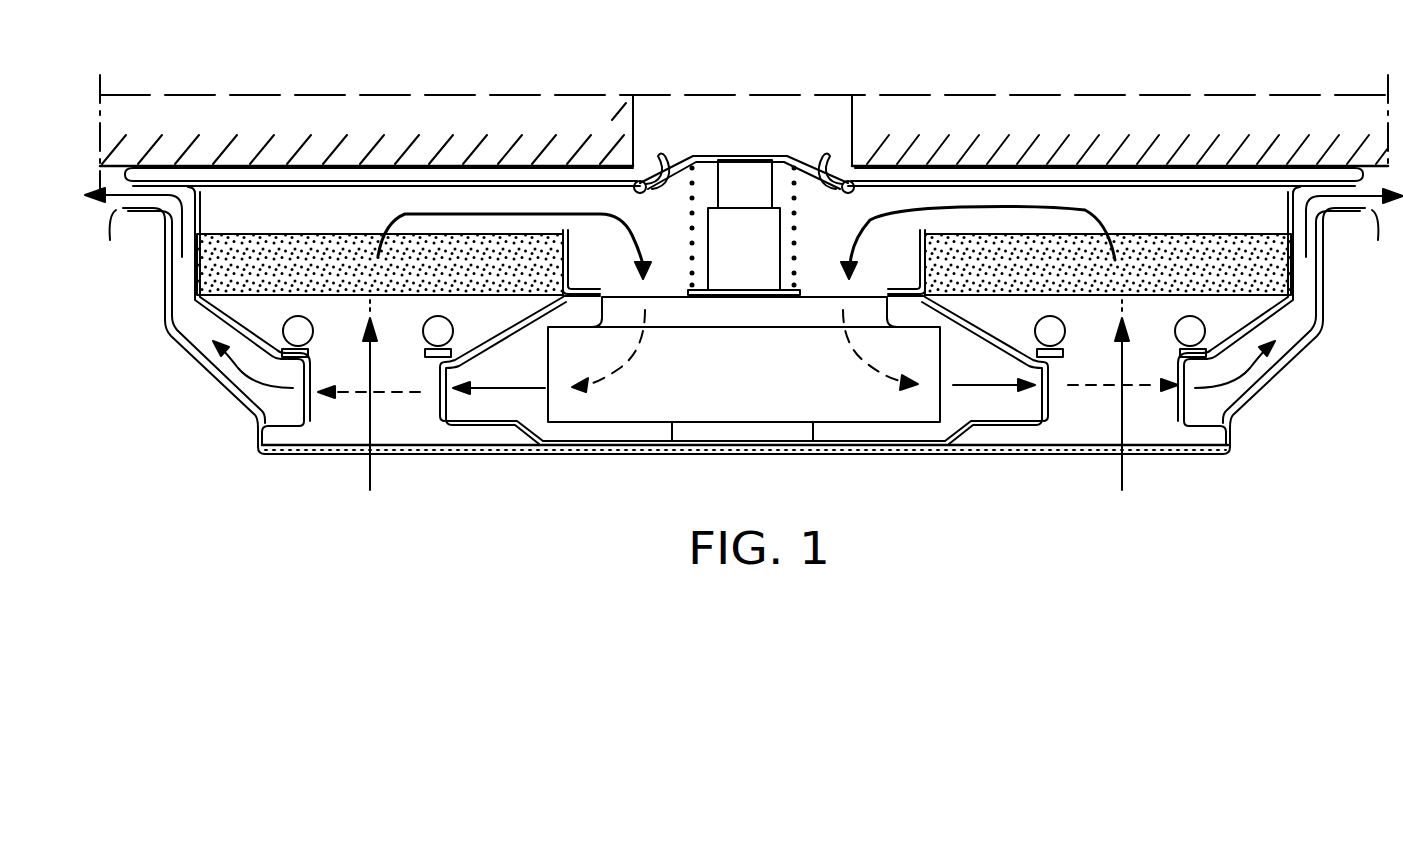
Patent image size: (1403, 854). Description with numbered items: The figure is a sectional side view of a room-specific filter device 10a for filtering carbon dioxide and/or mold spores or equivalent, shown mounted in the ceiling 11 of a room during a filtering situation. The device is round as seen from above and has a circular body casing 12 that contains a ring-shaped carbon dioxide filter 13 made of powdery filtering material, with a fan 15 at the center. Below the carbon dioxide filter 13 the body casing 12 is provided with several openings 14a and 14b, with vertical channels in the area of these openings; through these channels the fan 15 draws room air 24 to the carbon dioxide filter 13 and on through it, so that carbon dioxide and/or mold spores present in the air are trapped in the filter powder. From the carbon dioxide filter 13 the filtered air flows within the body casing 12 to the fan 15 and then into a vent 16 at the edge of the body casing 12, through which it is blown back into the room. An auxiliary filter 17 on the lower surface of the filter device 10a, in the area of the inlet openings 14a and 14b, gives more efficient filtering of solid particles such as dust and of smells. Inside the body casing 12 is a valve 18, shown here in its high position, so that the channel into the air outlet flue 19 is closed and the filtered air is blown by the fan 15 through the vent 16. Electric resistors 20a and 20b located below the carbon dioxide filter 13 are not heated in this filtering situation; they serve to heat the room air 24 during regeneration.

The room-specific filter device 10a is at (1290, 424).
The ceiling 11 is at (1213, 110).
The body casing 12 is at (365, 183).
The carbon dioxide filter 13 is at (275, 256).
The opening 14a is at (333, 428).
The opening 14b is at (1163, 428).
The fan 15 is at (668, 398).
The vent 16 is at (741, 241).
The auxiliary filter 17 is at (418, 456).
The valve 18 is at (670, 180).
The air outlet flue 19 is at (820, 102).
The electric resistor 20a is at (278, 338).
The electric resistor 20b is at (1200, 334).
The room air 24 is at (366, 470).